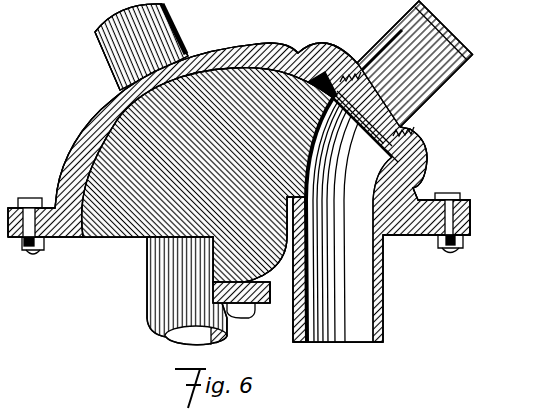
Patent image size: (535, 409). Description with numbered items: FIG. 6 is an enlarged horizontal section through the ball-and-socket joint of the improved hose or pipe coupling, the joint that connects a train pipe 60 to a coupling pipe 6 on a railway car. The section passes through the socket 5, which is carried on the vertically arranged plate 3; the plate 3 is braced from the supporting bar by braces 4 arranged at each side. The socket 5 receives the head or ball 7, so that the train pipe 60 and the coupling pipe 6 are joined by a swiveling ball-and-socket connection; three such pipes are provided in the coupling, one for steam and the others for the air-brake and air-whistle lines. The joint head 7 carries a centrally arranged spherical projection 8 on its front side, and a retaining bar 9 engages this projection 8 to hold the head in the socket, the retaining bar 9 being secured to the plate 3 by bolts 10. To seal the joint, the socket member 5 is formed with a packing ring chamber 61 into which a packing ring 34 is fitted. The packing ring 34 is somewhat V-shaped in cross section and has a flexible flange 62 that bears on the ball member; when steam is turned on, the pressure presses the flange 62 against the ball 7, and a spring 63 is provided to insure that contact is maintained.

The train pipe 60 is at (108, 57).
The socket 5 is at (263, 44).
The head or ball 7 is at (133, 232).
The coupling pipe 6 is at (383, 333).
The flange 62 is at (393, 163).
The spring 63 is at (388, 124).
The packing ring chamber 61 is at (422, 132).
The packing ring 34 is at (394, 160).
The plate 3 is at (470, 213).
The brace 4 is at (42, 250).
The spherical projection 8 is at (203, 270).
The retaining bar 9 is at (265, 301).
The bolt 10 is at (238, 314).